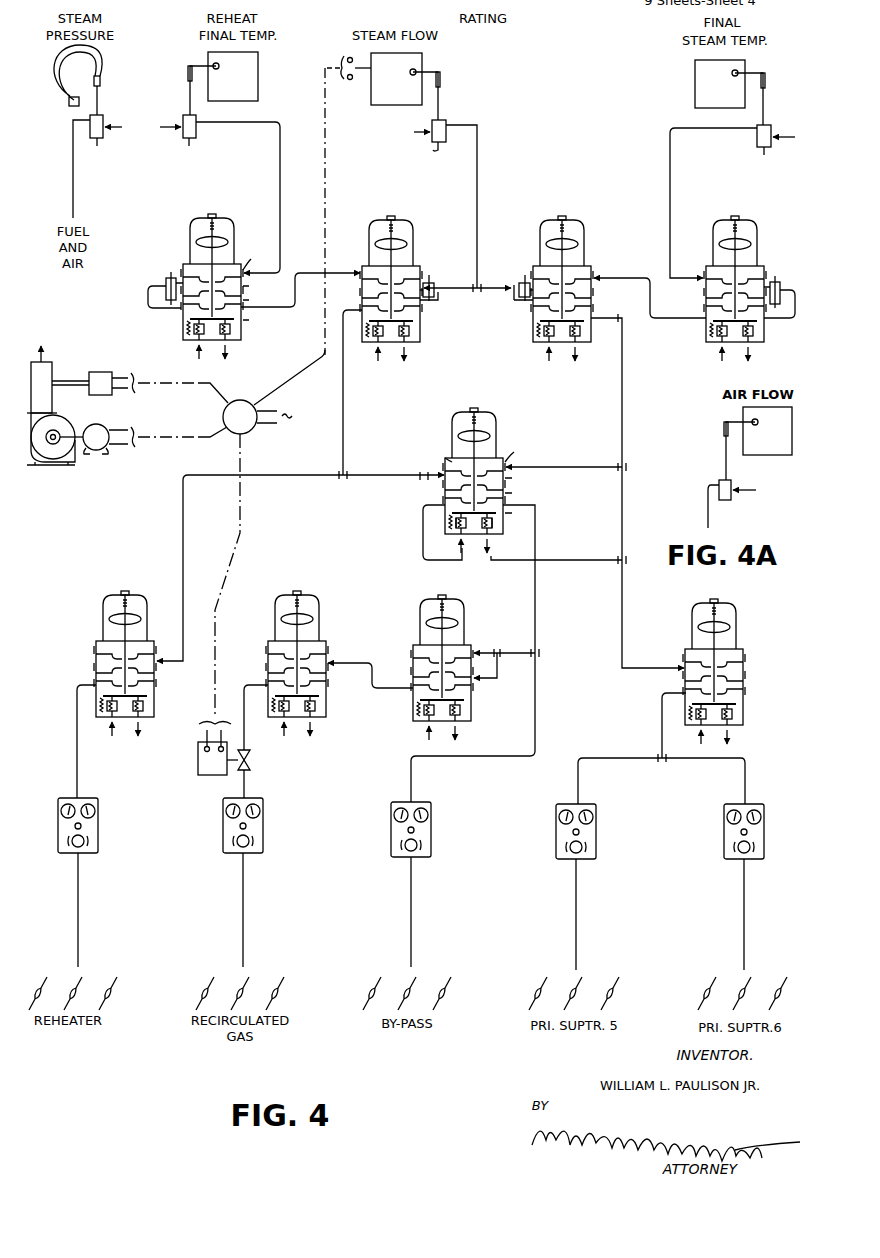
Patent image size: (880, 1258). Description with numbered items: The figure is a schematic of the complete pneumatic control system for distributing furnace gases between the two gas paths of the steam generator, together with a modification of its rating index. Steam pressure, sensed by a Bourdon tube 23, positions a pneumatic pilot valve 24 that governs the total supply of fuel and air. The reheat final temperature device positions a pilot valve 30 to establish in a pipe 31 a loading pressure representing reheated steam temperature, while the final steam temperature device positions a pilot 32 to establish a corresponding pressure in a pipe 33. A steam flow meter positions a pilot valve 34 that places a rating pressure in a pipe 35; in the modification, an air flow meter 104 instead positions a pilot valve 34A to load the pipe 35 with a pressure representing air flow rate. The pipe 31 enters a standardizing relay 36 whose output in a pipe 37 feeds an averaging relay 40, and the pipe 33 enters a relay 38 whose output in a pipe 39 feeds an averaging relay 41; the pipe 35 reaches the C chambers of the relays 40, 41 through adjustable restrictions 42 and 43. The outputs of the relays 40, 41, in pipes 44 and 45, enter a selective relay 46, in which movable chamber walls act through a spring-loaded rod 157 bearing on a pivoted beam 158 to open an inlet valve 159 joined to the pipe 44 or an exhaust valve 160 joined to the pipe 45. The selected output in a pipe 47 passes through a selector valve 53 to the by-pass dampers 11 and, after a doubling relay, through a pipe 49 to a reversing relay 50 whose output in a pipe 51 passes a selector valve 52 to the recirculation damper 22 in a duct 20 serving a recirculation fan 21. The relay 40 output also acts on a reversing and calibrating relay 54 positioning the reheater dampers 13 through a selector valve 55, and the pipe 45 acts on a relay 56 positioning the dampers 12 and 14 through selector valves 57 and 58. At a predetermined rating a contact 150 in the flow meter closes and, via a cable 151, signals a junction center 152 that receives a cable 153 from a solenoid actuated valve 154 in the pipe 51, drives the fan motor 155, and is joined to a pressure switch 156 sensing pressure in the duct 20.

In FIG. 4, the by-pass dampers 11 is at (407, 988).
In FIG. 4, the dampers 12 is at (574, 988).
In FIG. 4, the reheater dampers 13 is at (73, 988).
In FIG. 4, the dampers 14 is at (742, 988).
In FIG. 4, the duct 20 is at (52, 372).
In FIG. 4, the recirculation fan 21 is at (45, 465).
In FIG. 4, the recirculation damper 22 is at (240, 988).
In FIG. 4, the Bourdon tube 23 is at (101, 66).
In FIG. 4, the pneumatic pilot valve 24 is at (103, 136).
In FIG. 4, the pneumatic pilot valve 30 is at (196, 136).
In FIG. 4, the pipe 31 is at (282, 177).
In FIG. 4, the pilot 32 is at (771, 146).
In FIG. 4, the pipe 33 is at (668, 180).
In FIG. 4, the pilot valve 34 is at (431, 140).
In FIG. 4, the pipe 35 is at (476, 188).
In FIG. 4A, the pipe 35 is at (706, 508).
In FIG. 4, the standardizing relay 36 is at (192, 220).
In FIG. 4, the pipe 37 is at (295, 312).
In FIG. 4, the relay 38 is at (750, 226).
In FIG. 4, the pipe 39 is at (627, 272).
In FIG. 4, the averaging relay 40 is at (374, 224).
In FIG. 4, the averaging relay 41 is at (548, 224).
In FIG. 4, the adjustable restriction 42 is at (432, 281).
In FIG. 4, the adjustable restriction 43 is at (518, 282).
In FIG. 4, the pipe 44 is at (336, 397).
In FIG. 4, the pipe 45 is at (624, 397).
In FIG. 4, the selective relay 46 is at (488, 416).
In FIG. 4, the pipe 47 is at (537, 612).
In FIG. 4, the pipe 49 is at (356, 660).
In FIG. 4, the reversing relay 50 is at (314, 597).
In FIG. 4, the pipe 51 is at (252, 767).
In FIG. 4, the selector valve 52 is at (264, 822).
In FIG. 4, the selector valve 53 is at (432, 826).
In FIG. 4, the reversing and calibrating relay 54 is at (114, 597).
In FIG. 4, the selector valve 55 is at (99, 820).
In FIG. 4, the reversing and calibrating relay 56 is at (736, 604).
In FIG. 4, the selector valve 57 is at (597, 828).
In FIG. 4, the selector valve 58 is at (723, 828).
In FIG. 4A, the air flow meter 104 is at (760, 455).
In FIG. 4A, the pneumatic pilot valve 34A is at (731, 498).
In FIG. 4, the contact 150 is at (349, 79).
In FIG. 4, the cable 151 is at (328, 165).
In FIG. 4, the junction center 152 is at (240, 399).
In FIG. 4, the cable 153 is at (242, 522).
In FIG. 4, the solenoid actuated valve 154 is at (225, 776).
In FIG. 4, the motor 155 is at (98, 450).
In FIG. 4, the pressure switch 156 is at (140, 377).
In FIG. 4, the spring-loaded rod 157 is at (437, 450).
In FIG. 4, the pivoted spring-loaded beam 158 is at (423, 507).
In FIG. 4, the spring-loaded inlet valve 159 is at (458, 520).
In FIG. 4, the exhaust valve 160 is at (494, 520).